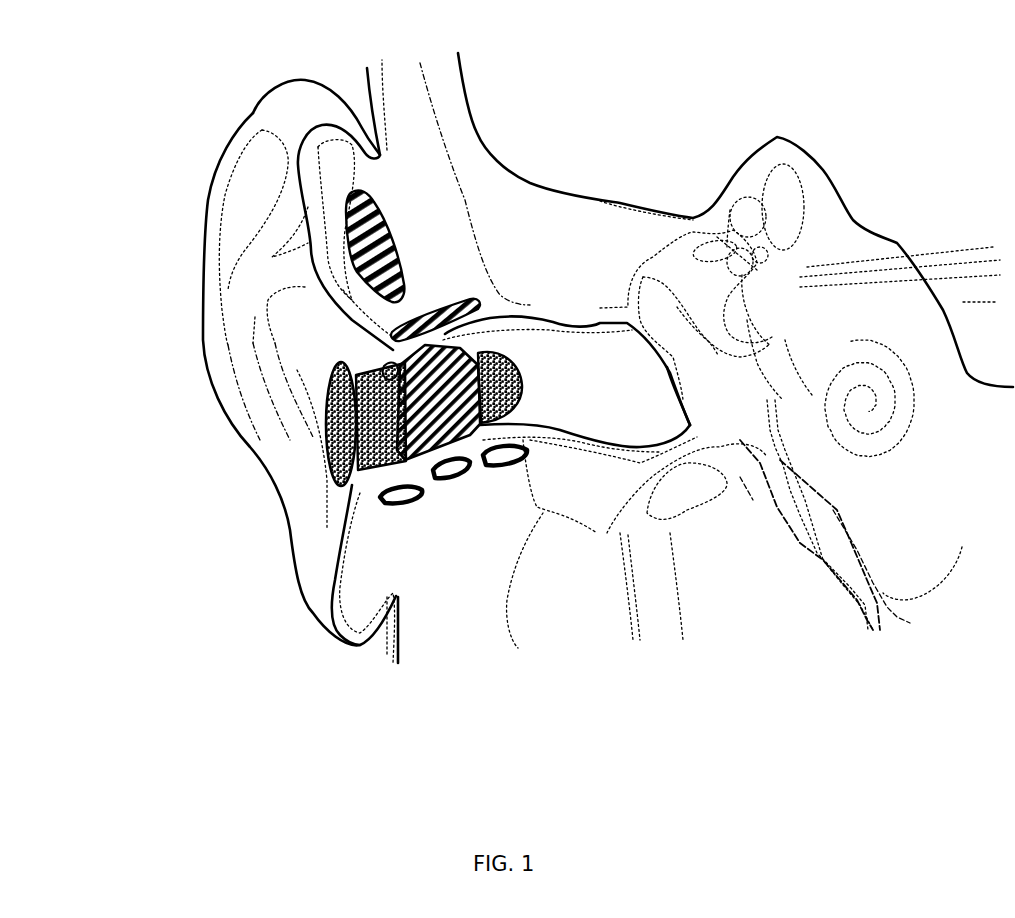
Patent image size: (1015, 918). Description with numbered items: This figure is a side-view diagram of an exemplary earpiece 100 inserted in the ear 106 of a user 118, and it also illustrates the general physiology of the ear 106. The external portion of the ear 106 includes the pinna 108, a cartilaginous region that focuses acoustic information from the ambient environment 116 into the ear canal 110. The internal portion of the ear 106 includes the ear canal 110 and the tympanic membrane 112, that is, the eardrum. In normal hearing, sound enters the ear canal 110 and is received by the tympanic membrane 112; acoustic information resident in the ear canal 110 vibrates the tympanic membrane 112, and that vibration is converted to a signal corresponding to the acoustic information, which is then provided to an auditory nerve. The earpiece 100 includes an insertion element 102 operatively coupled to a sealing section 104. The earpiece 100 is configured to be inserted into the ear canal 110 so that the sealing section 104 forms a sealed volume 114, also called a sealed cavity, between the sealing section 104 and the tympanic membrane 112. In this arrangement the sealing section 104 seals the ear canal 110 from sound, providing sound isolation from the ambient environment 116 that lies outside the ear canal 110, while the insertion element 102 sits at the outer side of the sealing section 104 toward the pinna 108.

The earpiece 100 is at (294, 311).
The insertion element 102 is at (336, 376).
The sealing section 104 is at (388, 376).
The ear 106 is at (641, 172).
The pinna 108 is at (253, 113).
The ear canal 110 is at (558, 328).
The tympanic membrane 112 is at (667, 367).
The sealed volume 114 is at (604, 380).
The ambient environment 116 is at (63, 465).
The user 118 is at (740, 25).